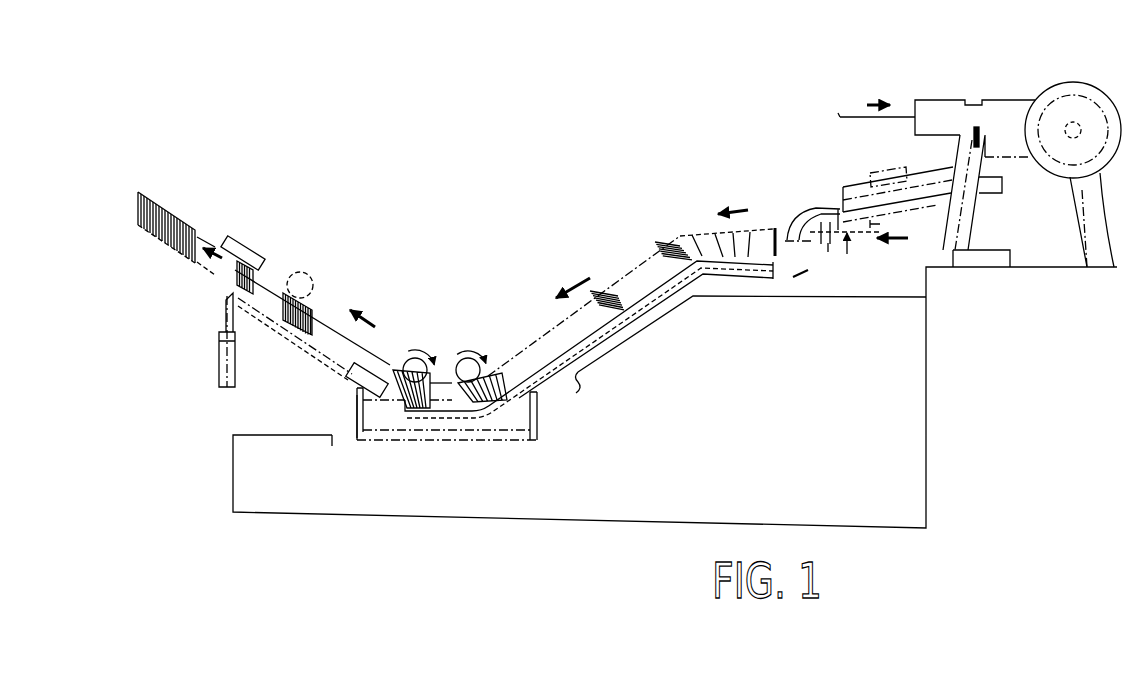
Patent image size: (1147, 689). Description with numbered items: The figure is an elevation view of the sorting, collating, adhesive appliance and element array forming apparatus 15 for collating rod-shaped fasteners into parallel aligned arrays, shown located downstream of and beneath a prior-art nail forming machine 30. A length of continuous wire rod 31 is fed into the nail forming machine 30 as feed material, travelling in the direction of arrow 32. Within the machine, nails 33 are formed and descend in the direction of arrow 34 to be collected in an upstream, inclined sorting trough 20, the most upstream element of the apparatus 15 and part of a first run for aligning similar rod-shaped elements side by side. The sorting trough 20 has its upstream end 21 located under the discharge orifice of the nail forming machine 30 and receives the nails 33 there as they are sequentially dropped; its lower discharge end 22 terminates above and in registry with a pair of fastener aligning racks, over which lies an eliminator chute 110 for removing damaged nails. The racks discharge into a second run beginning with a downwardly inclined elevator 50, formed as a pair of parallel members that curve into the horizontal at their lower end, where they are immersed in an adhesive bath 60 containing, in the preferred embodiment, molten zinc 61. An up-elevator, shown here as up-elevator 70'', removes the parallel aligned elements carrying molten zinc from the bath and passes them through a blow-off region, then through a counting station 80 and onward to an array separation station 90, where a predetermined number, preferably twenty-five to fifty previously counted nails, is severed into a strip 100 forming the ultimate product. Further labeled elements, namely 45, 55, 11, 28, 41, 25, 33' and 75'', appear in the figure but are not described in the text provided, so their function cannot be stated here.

The strip 100 is at (170, 203).
The array separation station 90 is at (252, 248).
The up-elevator 70'' is at (314, 311).
The counting station 80 is at (314, 281).
The deflector plate 75'' is at (336, 389).
The sorting, collating, adhesive appliance and element array forming apparatus 15 is at (455, 282).
The adhesive bath 60 is at (543, 425).
The molten zinc 61 is at (375, 420).
The downwardly inclined elevator 50 is at (611, 328).
The conveying direction arrow 55 is at (570, 286).
The finger guide 45 is at (730, 211).
The eliminator chute 110 is at (798, 225).
The conveyor discharge end 11 is at (793, 250).
The stop bar 33' is at (812, 306).
The guide plate end 28 is at (833, 197).
The lower discharge end 22 is at (843, 200).
The sorting trough 20 is at (927, 177).
The stop 41 is at (884, 224).
The feed direction arrow 25 is at (900, 246).
The arrow 32 is at (872, 101).
The continuous wire rod 31 is at (903, 114).
The nail forming machine 30 is at (992, 93).
The nails 33 is at (980, 188).
The arrow 34 is at (977, 146).
The upstream end 21 is at (1003, 188).